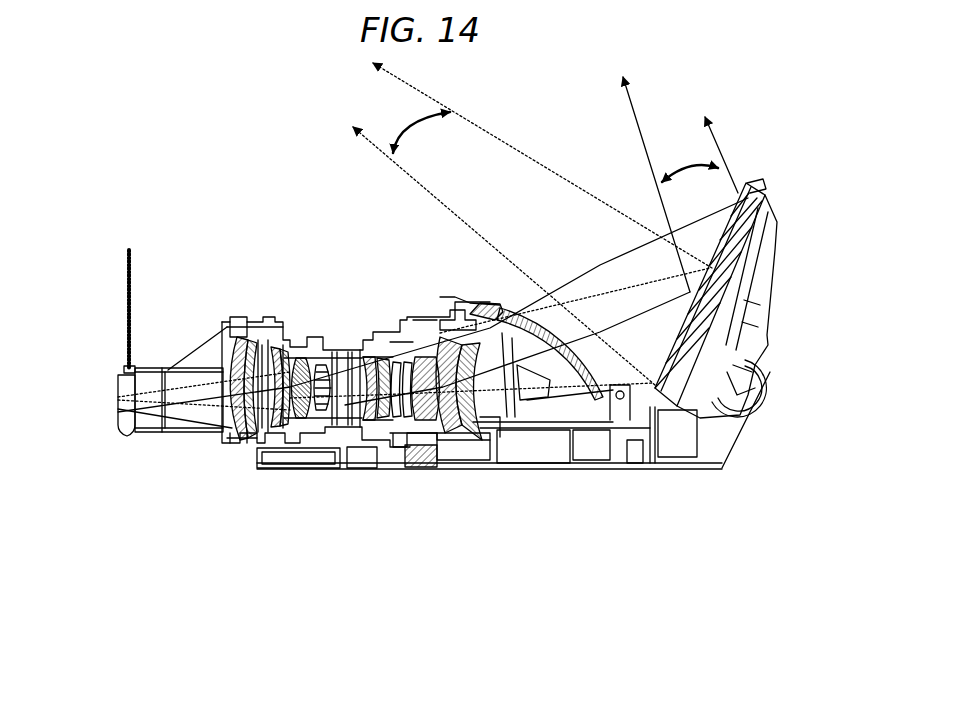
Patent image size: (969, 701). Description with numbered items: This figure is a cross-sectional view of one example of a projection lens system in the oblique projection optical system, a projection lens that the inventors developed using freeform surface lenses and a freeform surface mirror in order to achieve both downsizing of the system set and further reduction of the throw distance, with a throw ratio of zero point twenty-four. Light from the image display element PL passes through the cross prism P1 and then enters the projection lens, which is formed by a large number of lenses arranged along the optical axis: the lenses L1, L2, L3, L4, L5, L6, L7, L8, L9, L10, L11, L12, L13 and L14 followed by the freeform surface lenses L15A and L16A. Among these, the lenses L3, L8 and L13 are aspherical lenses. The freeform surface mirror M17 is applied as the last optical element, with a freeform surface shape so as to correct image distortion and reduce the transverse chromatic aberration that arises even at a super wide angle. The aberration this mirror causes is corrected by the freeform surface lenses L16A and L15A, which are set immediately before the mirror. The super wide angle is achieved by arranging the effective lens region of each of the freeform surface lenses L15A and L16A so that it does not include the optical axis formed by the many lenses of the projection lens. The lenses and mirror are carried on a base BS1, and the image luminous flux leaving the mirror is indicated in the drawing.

The image display element PL is at (122, 436).
The cross prism P1 is at (183, 417).
The lens L1 is at (235, 427).
The lens L2 is at (248, 338).
The aspherical lens L3 is at (262, 440).
The lens L4 is at (295, 362).
The lens L5 is at (313, 418).
The lens L6 is at (320, 340).
The lens L7 is at (362, 415).
The aspherical lens L8 is at (395, 420).
The lens L9 is at (392, 360).
The lens L10 is at (410, 440).
The lens L11 is at (428, 358).
The lens L12 is at (445, 435).
The aspherical lens L13 is at (466, 425).
The lens L14 is at (458, 318).
The freeform surface lens L15A is at (482, 312).
The freeform surface lens L16A is at (521, 312).
The freeform surface mirror M17 is at (737, 196).
The base BS1 is at (722, 462).